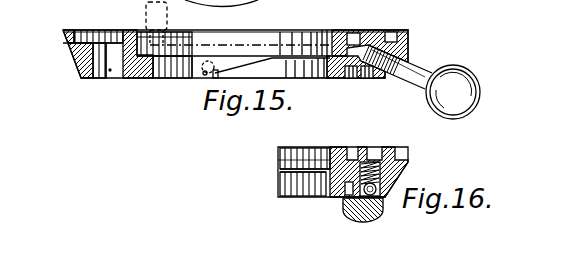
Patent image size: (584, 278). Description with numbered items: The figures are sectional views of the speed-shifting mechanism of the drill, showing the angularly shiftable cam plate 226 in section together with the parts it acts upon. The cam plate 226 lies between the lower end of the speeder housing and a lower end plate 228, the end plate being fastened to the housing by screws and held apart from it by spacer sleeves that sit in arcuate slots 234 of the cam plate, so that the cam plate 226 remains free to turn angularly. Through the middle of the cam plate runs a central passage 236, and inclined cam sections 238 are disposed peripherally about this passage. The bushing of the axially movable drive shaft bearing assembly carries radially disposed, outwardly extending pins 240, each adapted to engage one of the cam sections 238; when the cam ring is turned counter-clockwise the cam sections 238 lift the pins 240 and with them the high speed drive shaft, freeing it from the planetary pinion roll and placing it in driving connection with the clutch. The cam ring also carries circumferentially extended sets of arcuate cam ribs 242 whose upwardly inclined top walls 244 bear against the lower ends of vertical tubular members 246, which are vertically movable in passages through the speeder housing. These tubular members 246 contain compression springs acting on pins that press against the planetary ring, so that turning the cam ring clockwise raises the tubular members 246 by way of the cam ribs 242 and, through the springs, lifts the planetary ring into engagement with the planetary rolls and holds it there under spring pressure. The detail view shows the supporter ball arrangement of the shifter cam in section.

In FIG. 15, the cam plate 226 is at (70, 58).
In FIG. 16, the cam plate 226 is at (410, 161).
In FIG. 16, the lower end plate 228 is at (364, 222).
In FIG. 15, the arcuate slots 234 is at (113, 79).
In FIG. 15, the central passage 236 is at (288, 45).
In FIG. 16, the central passage 236 is at (313, 153).
In FIG. 15, the inclined cam sections 238 is at (234, 62).
In FIG. 15, the pins 240 is at (208, 77).
In FIG. 15, the arcuate cam ribs 242 is at (420, 81).
In FIG. 16, the arcuate cam ribs 242 is at (374, 157).
In FIG. 15, the upwardly inclined top walls 244 is at (199, 34).
In FIG. 15, the vertical tubular members 246 is at (147, 13).